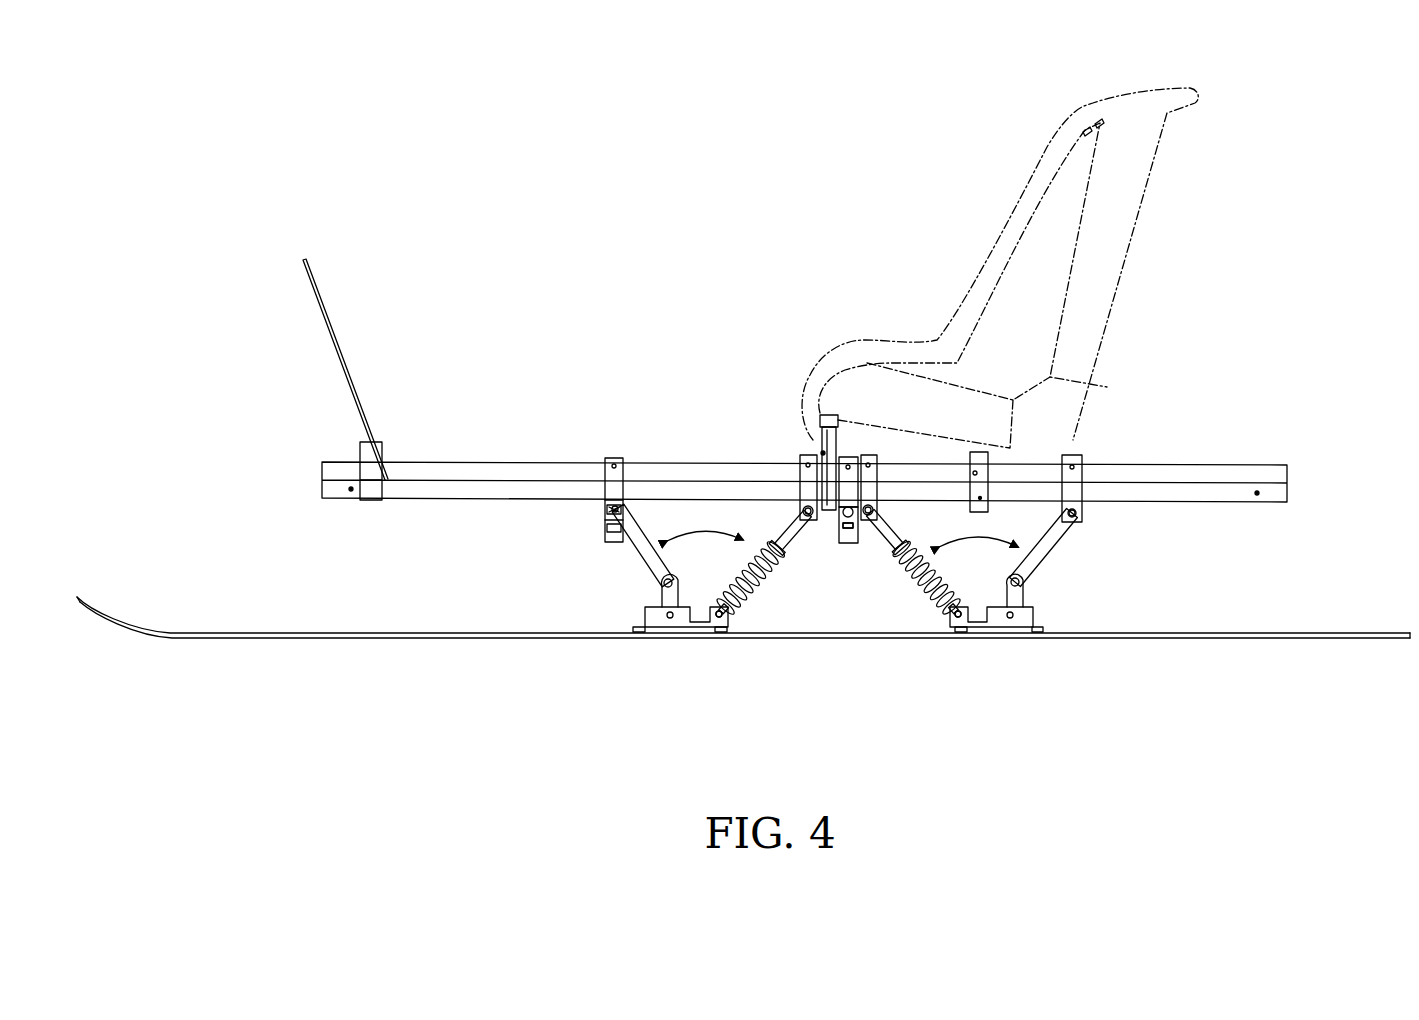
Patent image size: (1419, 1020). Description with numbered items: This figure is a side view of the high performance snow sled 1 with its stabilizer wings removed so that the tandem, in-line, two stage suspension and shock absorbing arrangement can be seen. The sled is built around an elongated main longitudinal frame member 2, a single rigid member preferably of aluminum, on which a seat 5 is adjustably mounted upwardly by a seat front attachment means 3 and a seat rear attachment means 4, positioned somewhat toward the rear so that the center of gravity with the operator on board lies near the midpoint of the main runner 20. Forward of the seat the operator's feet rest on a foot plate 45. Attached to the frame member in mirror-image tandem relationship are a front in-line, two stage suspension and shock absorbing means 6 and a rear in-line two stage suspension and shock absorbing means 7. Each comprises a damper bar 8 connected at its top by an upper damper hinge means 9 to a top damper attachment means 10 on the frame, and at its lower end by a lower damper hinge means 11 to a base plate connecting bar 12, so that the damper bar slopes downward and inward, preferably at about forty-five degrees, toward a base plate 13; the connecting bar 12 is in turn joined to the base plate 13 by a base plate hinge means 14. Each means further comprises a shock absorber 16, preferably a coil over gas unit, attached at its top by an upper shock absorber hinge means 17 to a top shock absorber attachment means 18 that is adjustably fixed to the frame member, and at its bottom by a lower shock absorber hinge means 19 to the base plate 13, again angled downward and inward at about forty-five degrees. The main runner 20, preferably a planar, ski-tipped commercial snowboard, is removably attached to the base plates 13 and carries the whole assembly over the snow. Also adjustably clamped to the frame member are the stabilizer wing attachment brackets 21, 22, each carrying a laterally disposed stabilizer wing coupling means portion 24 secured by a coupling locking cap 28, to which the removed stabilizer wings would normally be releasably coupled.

The snow sled 1 is at (866, 232).
The main longitudinal frame member 2 is at (483, 484).
The seat front attachment means 3 is at (825, 444).
The seat rear attachment means 4 is at (985, 485).
The seat 5 is at (1128, 160).
The front in-line, two stage suspension and shock absorbing means 6 is at (705, 550).
The rear in-line two stage suspension and shock absorbing means 7 is at (978, 558).
The damper bar 8 is at (636, 550).
The upper damper hinge means 9 is at (1077, 512).
The top damper attachment means 10 is at (607, 473).
The lower damper hinge means 11 is at (668, 584).
The base plate connecting bar 12 is at (670, 590).
The base plate 13 is at (996, 626).
The base plate hinge means 14 is at (671, 615).
The shock absorber 16 is at (772, 572).
The upper shock absorber hinge means 17 is at (805, 512).
The top shock absorber attachment means 18 is at (801, 470).
The lower shock absorber hinge means 19 is at (722, 618).
The main runner 20 is at (440, 634).
The stabilizer wing attachment bracket 21 is at (624, 503).
The stabilizer wing attachment bracket 22 is at (845, 516).
The stabilizer wing coupling means portion 24 is at (604, 530).
The coupling locking cap 28 is at (606, 510).
The foot plate 45 is at (325, 298).